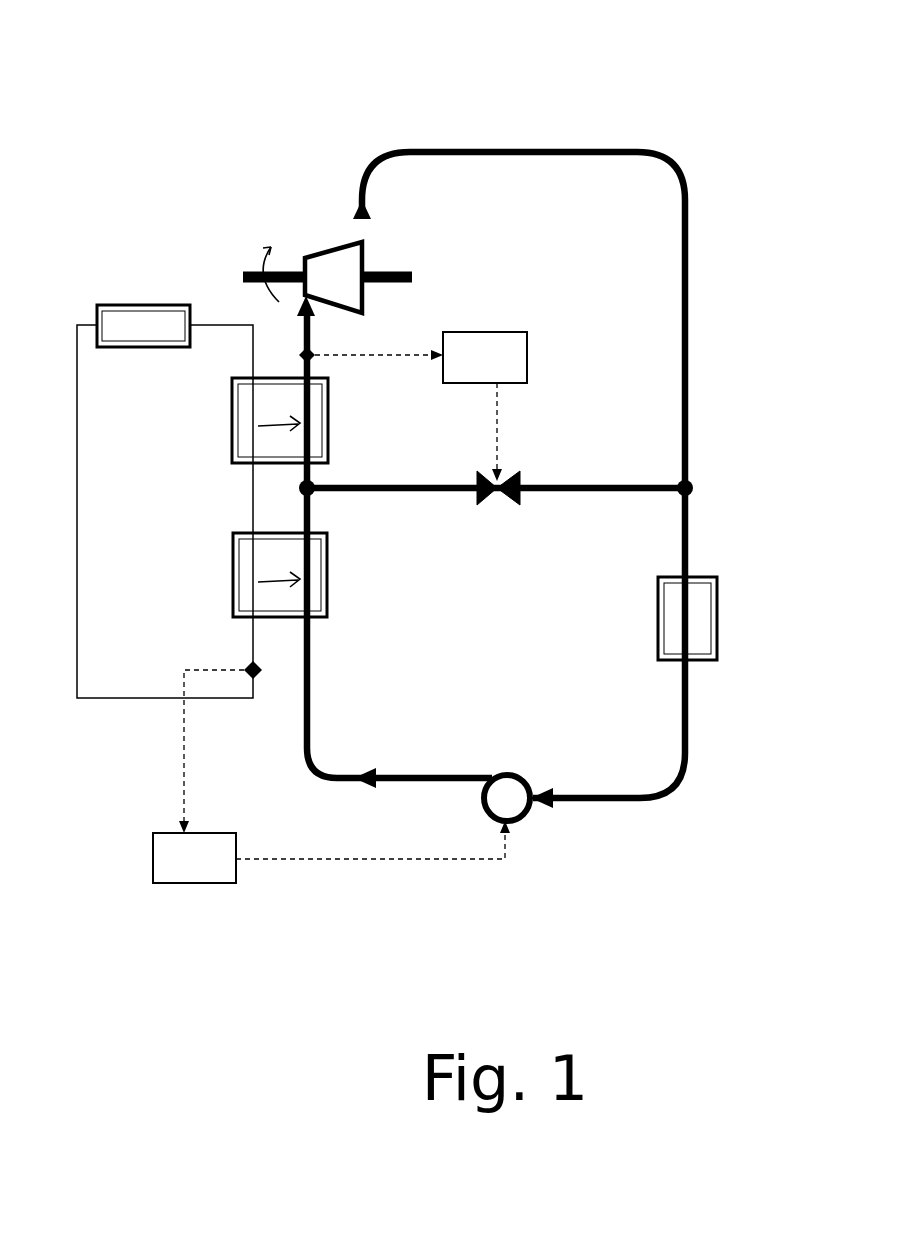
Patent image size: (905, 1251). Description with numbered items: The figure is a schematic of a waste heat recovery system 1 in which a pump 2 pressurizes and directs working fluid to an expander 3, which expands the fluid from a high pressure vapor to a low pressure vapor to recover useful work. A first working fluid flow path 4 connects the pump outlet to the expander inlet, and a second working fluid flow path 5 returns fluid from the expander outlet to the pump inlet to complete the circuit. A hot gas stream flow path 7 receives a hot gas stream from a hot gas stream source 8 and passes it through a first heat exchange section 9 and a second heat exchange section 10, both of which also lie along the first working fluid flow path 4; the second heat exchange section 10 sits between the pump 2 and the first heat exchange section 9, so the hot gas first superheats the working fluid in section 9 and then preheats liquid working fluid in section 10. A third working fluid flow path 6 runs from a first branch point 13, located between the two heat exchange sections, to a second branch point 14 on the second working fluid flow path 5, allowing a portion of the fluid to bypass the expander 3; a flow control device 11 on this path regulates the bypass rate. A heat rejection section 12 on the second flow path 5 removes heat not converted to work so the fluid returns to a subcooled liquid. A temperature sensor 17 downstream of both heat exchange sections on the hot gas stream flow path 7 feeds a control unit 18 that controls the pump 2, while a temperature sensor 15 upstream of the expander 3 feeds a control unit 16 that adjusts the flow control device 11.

The waste heat recovery system 1 is at (720, 117).
The pump 2 is at (509, 790).
The expander 3 is at (347, 262).
The first working fluid flow path 4 is at (311, 688).
The second working fluid flow path 5 is at (688, 328).
The third working fluid flow path 6 is at (575, 480).
The hot gas stream flow path 7 is at (245, 345).
The hot gas stream source 8 is at (150, 304).
The first heat exchange section 9 is at (232, 432).
The second heat exchange section 10 is at (232, 565).
The flow control device 11 is at (492, 496).
The heat rejection section 12 is at (718, 610).
The first branch point 13 is at (317, 498).
The second branch point 14 is at (694, 490).
The temperature sensor 15 is at (315, 351).
The control unit 16 is at (421, 406).
The temperature sensor 17 is at (247, 666).
The control unit 18 is at (331, 776).